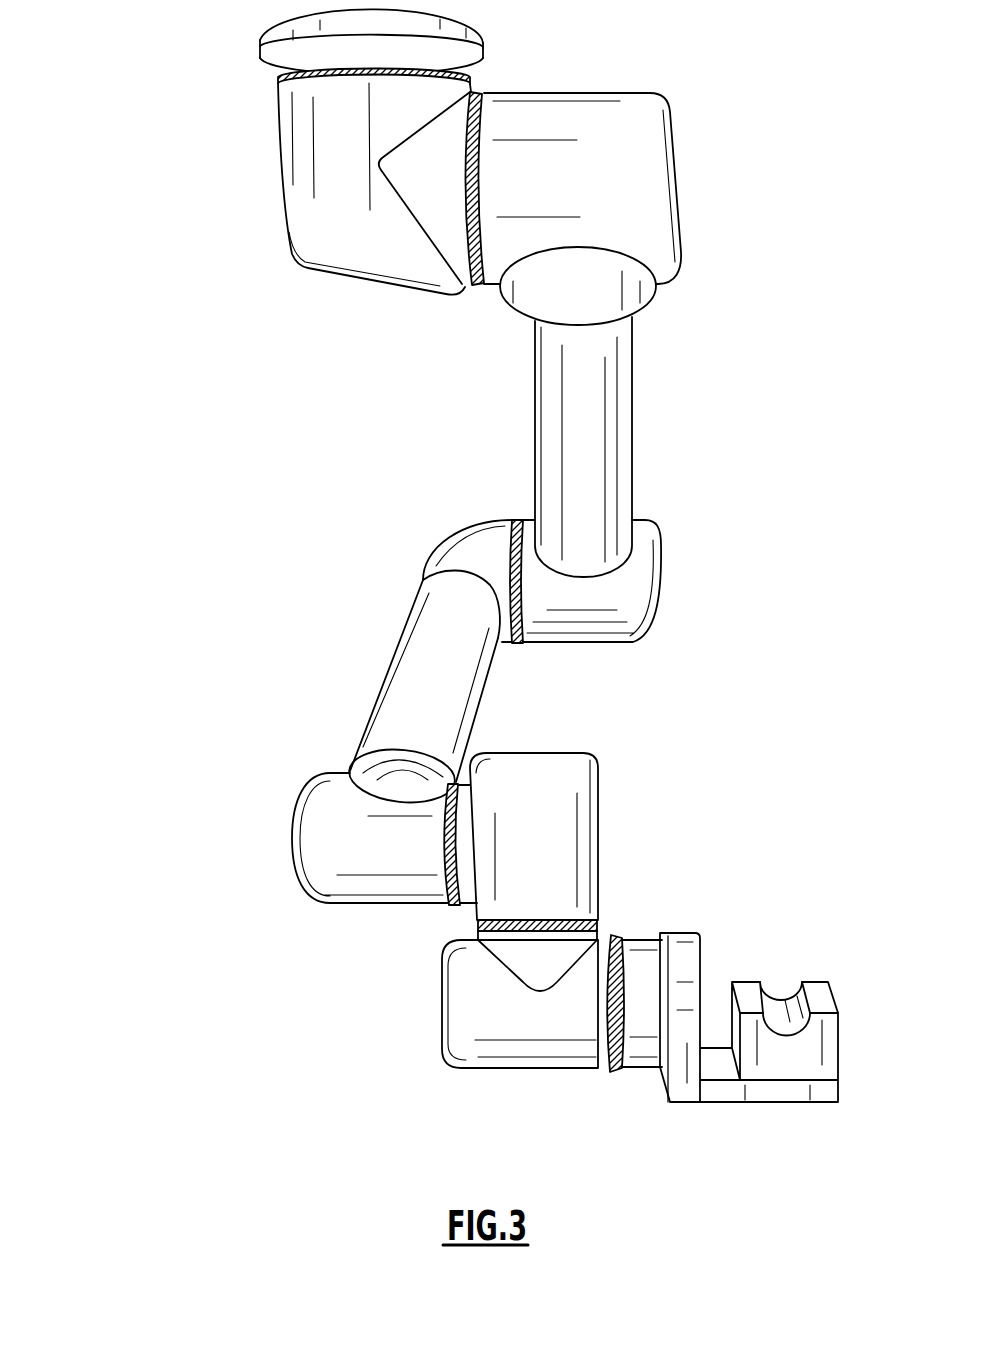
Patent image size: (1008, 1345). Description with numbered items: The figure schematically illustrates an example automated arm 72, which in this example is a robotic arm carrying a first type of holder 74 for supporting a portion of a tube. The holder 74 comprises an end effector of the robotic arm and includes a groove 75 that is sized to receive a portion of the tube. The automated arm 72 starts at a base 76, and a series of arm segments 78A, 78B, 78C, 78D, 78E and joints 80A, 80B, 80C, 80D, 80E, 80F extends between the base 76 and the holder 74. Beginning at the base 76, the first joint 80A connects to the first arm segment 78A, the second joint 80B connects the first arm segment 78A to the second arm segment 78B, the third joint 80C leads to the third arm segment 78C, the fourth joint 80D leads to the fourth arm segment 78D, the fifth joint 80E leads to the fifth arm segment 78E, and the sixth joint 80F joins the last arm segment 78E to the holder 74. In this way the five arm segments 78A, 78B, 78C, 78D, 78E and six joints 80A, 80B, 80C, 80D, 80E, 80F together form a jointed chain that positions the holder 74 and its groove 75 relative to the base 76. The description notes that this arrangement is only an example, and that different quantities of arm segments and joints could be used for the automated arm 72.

The automated arm 72 is at (126, 50).
The holder 74 is at (799, 1112).
The groove 75 is at (807, 1003).
The base 76 is at (467, 33).
The arm segment 78A is at (303, 180).
The arm segment 78B is at (623, 482).
The arm segment 78C is at (388, 682).
The arm segment 78D is at (582, 870).
The arm segment 78E is at (517, 1070).
The joint 80A is at (292, 78).
The joint 80B is at (465, 187).
The joint 80C is at (511, 578).
The joint 80D is at (443, 843).
The joint 80E is at (478, 928).
The joint 80F is at (617, 1001).